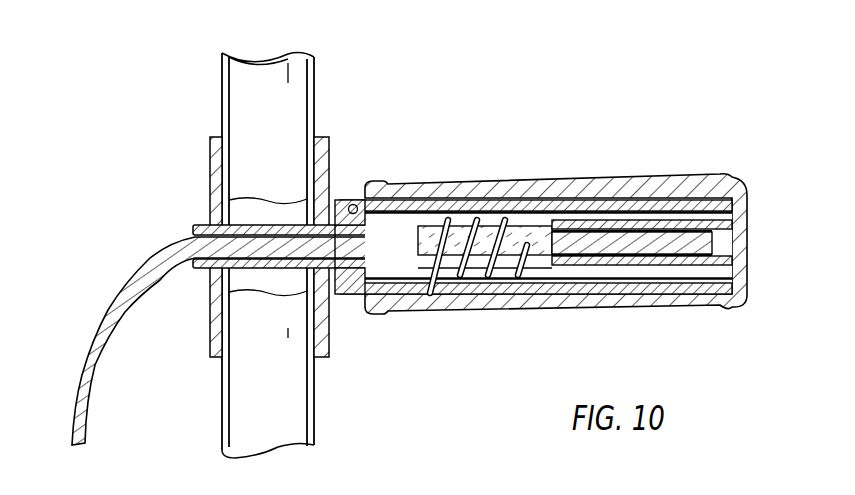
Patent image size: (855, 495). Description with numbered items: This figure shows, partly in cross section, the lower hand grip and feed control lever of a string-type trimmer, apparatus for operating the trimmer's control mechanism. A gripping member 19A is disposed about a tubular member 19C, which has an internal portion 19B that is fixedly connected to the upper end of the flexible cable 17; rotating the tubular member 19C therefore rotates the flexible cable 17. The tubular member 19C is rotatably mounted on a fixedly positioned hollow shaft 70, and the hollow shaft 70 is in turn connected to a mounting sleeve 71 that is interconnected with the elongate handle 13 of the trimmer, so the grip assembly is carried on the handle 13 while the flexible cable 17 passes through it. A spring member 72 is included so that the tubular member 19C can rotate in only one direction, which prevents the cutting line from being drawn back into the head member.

The handle 13 is at (315, 72).
The mounting sleeve 71 is at (211, 155).
The flexible cable 17 is at (90, 338).
The gripping member 19A is at (600, 176).
The tubular member 19C is at (529, 199).
The internal portion 19B is at (690, 259).
The hollow shaft 70 is at (575, 270).
The spring member 72 is at (463, 276).